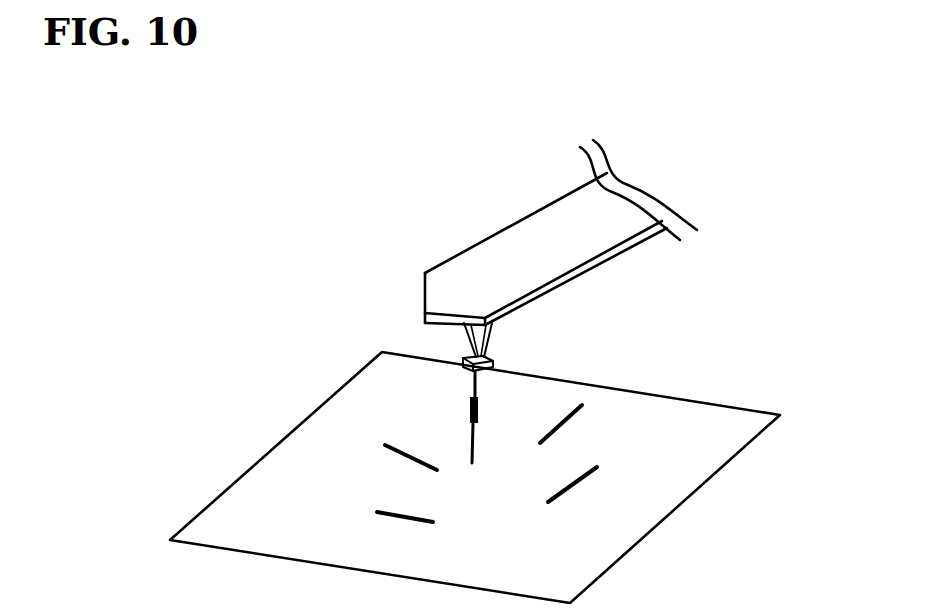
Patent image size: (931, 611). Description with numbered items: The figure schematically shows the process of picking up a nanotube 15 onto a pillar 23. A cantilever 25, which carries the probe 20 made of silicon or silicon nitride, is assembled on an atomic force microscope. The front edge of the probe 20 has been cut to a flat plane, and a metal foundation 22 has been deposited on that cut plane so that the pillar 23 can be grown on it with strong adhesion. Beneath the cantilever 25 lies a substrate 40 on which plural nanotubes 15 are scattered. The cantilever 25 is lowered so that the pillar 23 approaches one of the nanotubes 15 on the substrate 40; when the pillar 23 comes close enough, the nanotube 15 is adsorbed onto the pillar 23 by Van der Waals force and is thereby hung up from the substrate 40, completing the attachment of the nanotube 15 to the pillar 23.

The nanotube 15 is at (472, 428).
The probe 20 is at (487, 332).
The foundation 22 is at (493, 362).
The pillar 23 is at (473, 397).
The cantilever 25 is at (508, 243).
The substrate 40 is at (717, 418).